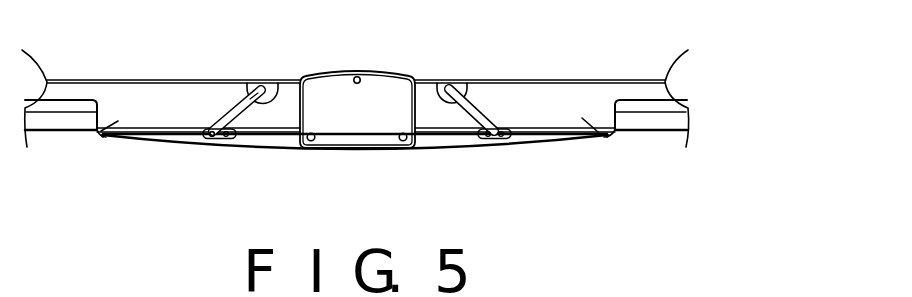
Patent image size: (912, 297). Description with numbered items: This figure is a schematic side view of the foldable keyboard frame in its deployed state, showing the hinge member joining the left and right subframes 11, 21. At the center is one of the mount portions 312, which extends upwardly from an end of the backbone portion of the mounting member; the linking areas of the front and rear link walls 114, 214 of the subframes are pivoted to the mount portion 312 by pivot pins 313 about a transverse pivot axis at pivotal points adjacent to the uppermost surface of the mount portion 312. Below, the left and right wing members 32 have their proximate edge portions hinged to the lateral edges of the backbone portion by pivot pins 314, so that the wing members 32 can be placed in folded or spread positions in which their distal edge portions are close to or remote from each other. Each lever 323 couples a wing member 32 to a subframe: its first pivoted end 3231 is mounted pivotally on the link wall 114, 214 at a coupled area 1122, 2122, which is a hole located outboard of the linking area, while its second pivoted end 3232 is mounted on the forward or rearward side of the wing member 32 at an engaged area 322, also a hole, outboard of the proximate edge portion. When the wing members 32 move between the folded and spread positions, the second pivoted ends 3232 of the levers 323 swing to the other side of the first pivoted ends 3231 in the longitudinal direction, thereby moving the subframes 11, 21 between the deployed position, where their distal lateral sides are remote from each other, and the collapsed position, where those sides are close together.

The left subframe 11 is at (110, 73).
The left coupled area 1122 is at (259, 89).
The right subframe 21 is at (609, 63).
The right coupled area 2122 is at (453, 88).
The front link wall 114 is at (101, 135).
The rear link wall 214 is at (601, 137).
The mount portion 312 is at (333, 91).
The pivot pin 313 is at (360, 78).
The pivot pin 314 is at (400, 139).
The wing member 32 is at (176, 144).
The engaged area 322 is at (215, 142).
The lever 323 is at (202, 115).
The first pivoted end 3231 is at (251, 91).
The second pivoted end 3232 is at (216, 138).